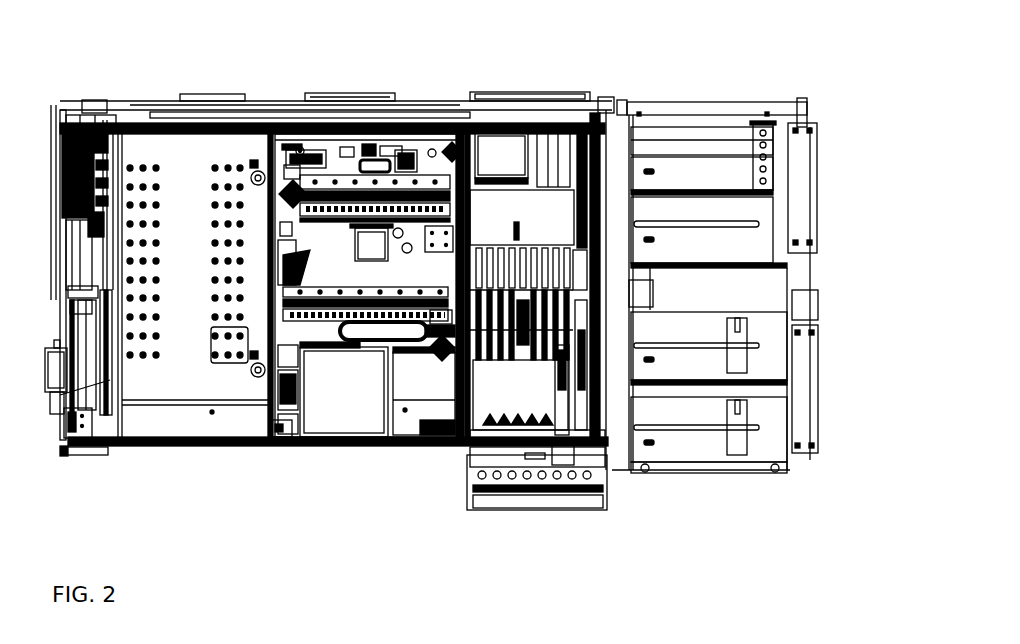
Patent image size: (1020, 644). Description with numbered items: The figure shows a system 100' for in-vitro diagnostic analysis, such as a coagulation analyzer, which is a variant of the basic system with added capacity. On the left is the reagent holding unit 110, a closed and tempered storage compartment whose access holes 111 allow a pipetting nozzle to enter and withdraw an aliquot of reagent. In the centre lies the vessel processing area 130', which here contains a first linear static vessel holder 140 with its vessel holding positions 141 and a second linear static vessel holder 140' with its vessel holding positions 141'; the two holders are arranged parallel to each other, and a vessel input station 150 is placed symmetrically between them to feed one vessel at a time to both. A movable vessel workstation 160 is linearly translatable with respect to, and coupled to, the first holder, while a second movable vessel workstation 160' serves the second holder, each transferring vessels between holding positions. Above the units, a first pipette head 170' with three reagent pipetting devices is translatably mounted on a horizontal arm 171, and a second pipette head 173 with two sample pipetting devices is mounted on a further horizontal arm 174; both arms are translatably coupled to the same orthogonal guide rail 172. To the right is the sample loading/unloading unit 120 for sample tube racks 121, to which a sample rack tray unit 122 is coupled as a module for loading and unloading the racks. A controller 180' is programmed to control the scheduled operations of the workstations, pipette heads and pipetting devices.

The system 100' is at (380, 76).
The reagent holding unit 110 is at (210, 458).
The access holes 111 is at (138, 358).
The sample loading/unloading unit 120 is at (515, 520).
The sample tube racks 121 is at (767, 167).
The sample rack tray unit 122 is at (733, 486).
The vessel processing area 130' is at (369, 339).
The linear static vessel holder 140 is at (335, 446).
The second linear static vessel holder 140' is at (375, 121).
The vessel holding positions 141 is at (390, 445).
The vessel holding positions 141' is at (375, 130).
The vessel input station 150 is at (389, 168).
The movable vessel workstation 160 is at (436, 434).
The second movable vessel workstation 160' is at (305, 108).
The first pipette head 170' is at (80, 230).
The horizontal arm 171 is at (113, 393).
The orthogonal guide rail 172 is at (249, 125).
The second pipette head 173 is at (563, 430).
The horizontal arm 174 is at (587, 355).
The controller 180' is at (527, 241).